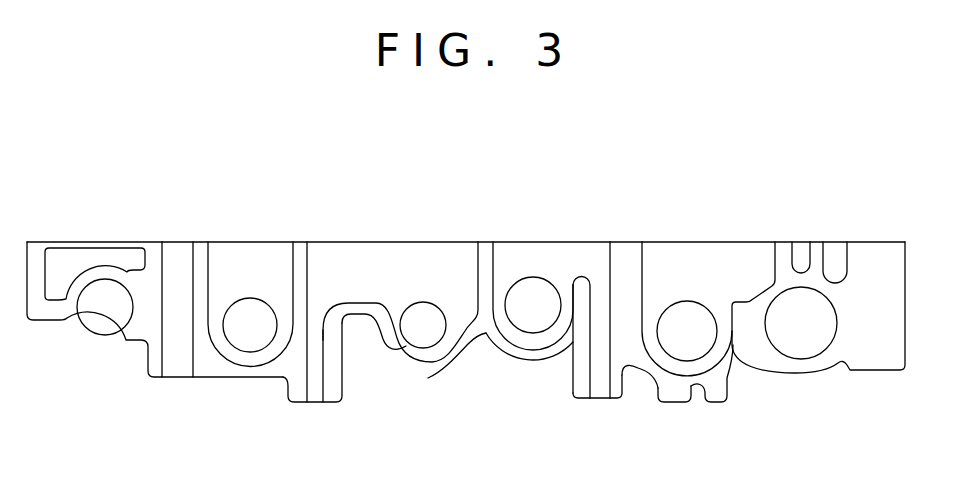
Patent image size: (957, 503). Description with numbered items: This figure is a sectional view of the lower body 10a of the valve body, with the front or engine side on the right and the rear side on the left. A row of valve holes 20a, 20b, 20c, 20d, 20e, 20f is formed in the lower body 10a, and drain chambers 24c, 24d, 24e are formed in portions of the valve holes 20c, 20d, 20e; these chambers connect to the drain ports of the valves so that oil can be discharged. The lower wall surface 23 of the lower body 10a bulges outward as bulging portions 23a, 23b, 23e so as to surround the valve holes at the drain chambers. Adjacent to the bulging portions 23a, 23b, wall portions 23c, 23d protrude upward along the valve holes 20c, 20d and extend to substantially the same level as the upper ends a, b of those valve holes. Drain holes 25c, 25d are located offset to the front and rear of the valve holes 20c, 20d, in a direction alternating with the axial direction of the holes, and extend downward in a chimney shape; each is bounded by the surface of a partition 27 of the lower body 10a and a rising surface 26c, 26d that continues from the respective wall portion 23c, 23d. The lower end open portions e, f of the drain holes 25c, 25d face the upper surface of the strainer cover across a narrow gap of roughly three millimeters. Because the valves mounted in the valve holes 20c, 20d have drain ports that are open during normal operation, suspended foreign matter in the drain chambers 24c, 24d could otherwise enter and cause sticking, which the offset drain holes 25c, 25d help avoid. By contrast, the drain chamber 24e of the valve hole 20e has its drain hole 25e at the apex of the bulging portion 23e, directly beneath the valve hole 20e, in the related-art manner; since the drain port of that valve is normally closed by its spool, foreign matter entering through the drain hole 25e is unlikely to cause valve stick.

The lower body 10a is at (565, 202).
The valve hole 20a is at (88, 330).
The valve hole 20b is at (230, 348).
The valve hole 20c is at (432, 347).
The valve hole 20d is at (511, 343).
The valve hole 20e is at (667, 304).
The valve hole 20f is at (792, 362).
The lower wall surface 23 is at (197, 377).
The bulging portion 23a is at (410, 367).
The bulging portion 23b is at (537, 374).
The wall portion 23c is at (358, 304).
The wall portion 23d is at (591, 242).
The bulging portion 23e is at (720, 388).
The drain chamber 24c is at (357, 242).
The drain chamber 24d is at (498, 242).
The drain chamber 24e is at (660, 247).
The drain hole 25c is at (326, 402).
The drain hole 25d is at (601, 400).
The drain hole 25e is at (692, 402).
The rising surface 26c is at (336, 359).
The rising surface 26d is at (571, 387).
The partition 27 is at (294, 365).
The upper end a is at (422, 303).
The upper end b is at (543, 240).
The lower end open portion e is at (307, 402).
The lower end open portion f is at (584, 400).